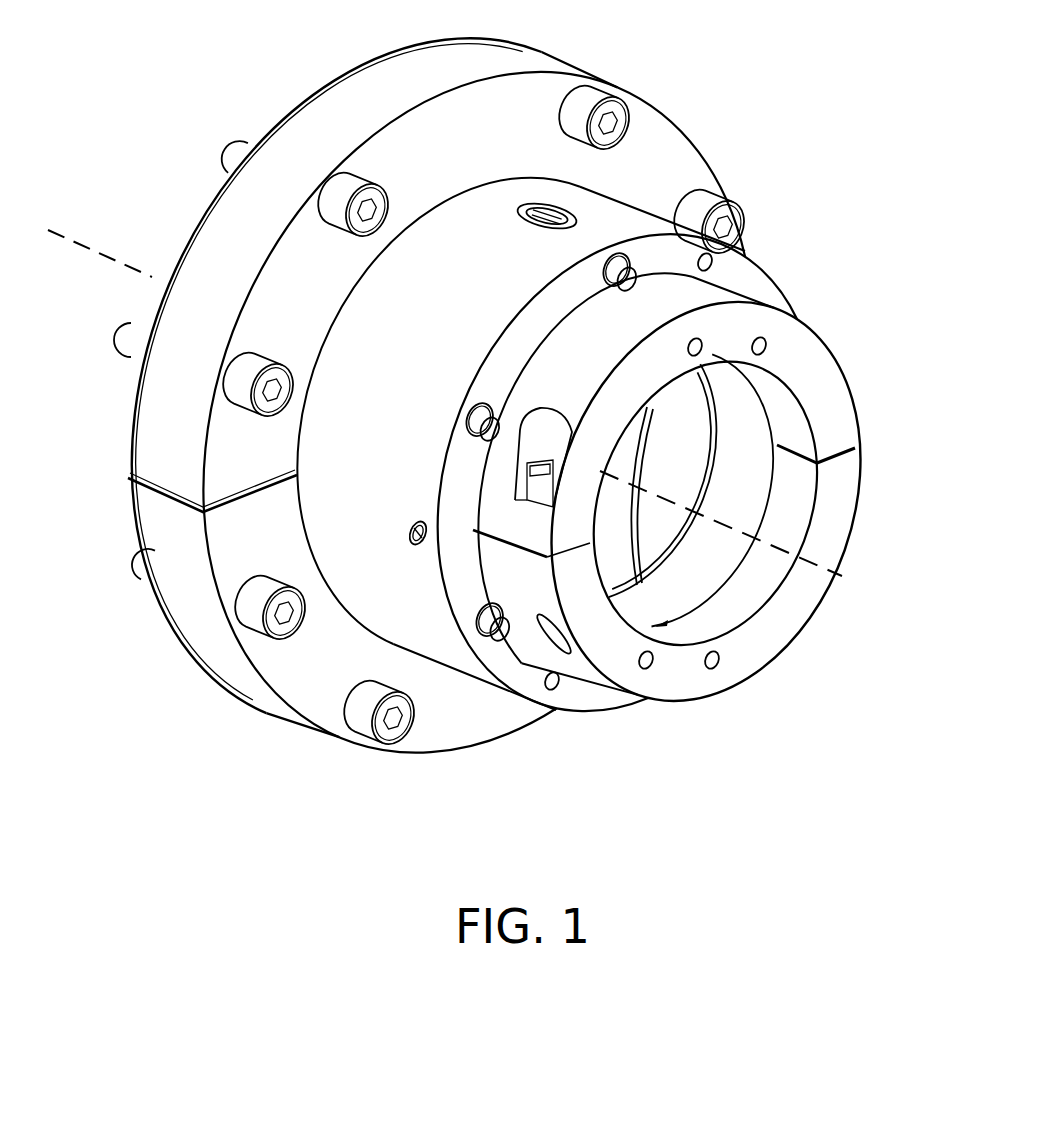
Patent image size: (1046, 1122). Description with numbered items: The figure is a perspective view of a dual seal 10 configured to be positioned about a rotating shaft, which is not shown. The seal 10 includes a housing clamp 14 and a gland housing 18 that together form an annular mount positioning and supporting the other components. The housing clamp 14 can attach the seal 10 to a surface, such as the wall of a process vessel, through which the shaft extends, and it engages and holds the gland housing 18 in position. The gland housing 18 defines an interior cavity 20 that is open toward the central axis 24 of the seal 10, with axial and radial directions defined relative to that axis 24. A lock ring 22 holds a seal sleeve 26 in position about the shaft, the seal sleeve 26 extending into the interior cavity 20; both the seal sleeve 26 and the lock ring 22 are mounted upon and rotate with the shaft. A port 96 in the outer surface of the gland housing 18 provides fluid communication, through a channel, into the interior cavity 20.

The seal 10 is at (702, 73).
The housing clamp 14 is at (700, 157).
The gland housing 18 is at (780, 288).
The interior cavity 20 is at (642, 536).
The lock ring 22 is at (856, 428).
The central axis 24 is at (133, 266).
The seal sleeve 26 is at (753, 560).
The port 96 is at (408, 531).